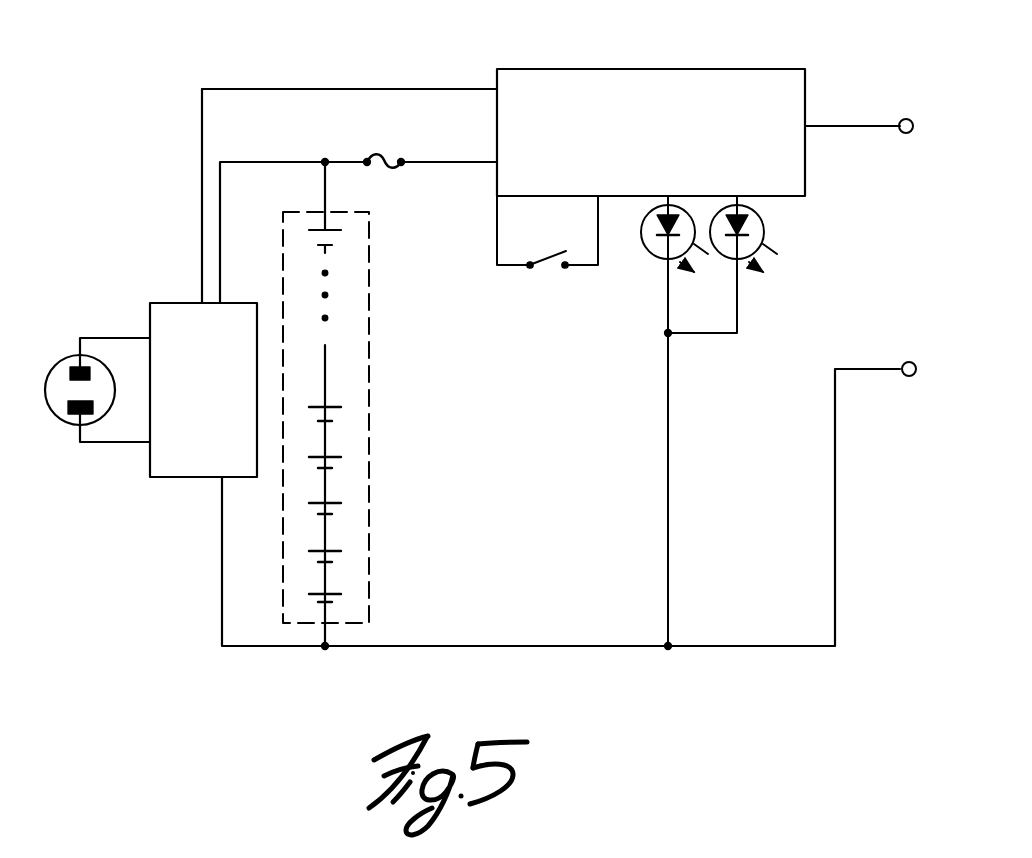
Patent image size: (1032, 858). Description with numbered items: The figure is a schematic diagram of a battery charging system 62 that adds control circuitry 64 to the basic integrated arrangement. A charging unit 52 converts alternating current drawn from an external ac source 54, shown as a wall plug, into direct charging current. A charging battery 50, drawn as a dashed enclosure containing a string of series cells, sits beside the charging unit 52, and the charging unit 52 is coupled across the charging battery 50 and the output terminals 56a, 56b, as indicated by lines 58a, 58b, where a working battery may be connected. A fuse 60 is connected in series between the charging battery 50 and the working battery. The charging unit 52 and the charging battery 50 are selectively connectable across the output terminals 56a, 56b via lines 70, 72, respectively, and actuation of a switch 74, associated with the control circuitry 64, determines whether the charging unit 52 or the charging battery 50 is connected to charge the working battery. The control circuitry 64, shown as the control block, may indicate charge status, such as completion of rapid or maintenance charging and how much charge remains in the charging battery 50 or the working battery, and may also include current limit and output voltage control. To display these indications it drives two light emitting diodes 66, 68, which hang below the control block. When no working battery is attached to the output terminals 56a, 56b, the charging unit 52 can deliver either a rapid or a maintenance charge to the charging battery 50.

The charging battery 50 is at (370, 378).
The charging unit 52 is at (166, 303).
The external ac source 54 is at (68, 356).
The output terminal 56a is at (903, 119).
The output terminal 56b is at (908, 377).
The line 58a is at (818, 126).
The line 58b is at (752, 648).
The fuse 60 is at (386, 158).
The battery charging system 62 is at (172, 177).
The control circuitry 64 is at (598, 70).
The light emitting diode 66 is at (652, 250).
The light emitting diode 68 is at (768, 228).
The line 70 is at (385, 90).
The line 72 is at (240, 162).
The switch 74 is at (540, 272).